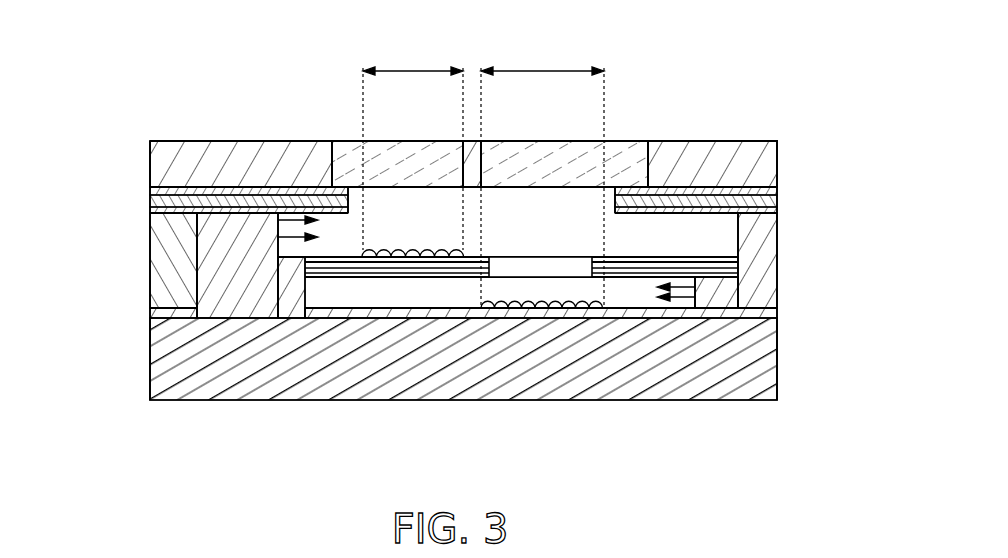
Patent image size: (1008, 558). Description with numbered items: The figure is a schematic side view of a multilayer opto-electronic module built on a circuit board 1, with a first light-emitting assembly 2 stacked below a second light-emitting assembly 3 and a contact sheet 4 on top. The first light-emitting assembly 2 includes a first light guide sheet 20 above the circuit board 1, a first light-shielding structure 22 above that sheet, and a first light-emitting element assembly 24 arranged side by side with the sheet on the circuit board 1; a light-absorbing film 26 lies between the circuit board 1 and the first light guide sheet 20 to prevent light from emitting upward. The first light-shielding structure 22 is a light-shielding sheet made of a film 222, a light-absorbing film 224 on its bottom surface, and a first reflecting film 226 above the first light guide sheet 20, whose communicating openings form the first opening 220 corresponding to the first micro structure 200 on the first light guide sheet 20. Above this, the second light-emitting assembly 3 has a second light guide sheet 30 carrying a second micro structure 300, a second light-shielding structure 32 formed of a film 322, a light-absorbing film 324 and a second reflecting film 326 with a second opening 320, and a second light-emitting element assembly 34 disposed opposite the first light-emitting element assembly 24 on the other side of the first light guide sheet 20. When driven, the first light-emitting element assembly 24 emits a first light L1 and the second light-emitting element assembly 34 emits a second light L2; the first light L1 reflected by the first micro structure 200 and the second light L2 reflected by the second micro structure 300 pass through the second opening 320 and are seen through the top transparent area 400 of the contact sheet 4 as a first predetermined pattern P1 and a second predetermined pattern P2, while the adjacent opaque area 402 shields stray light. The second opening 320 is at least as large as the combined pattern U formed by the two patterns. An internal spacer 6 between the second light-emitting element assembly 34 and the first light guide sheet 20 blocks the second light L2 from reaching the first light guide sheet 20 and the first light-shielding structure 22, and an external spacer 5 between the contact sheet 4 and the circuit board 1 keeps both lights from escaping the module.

The circuit board 1 is at (165, 366).
The first light-emitting assembly 2 is at (601, 292).
The second light-emitting assembly 3 is at (391, 292).
The contact sheet 4 is at (463, 119).
The external spacer 5 is at (183, 312).
The internal spacer 6 is at (300, 312).
The first light guide sheet 20 is at (463, 296).
The first light-shielding structure 22 is at (585, 271).
The first light-emitting element assembly 24 is at (717, 312).
The light-absorbing film 26 is at (519, 310).
The second light guide sheet 30 is at (150, 263).
The second light-shielding structure 32 is at (404, 185).
The second light-emitting element assembly 34 is at (150, 293).
The first micro structure 200 is at (556, 296).
The first opening 220 is at (573, 250).
The film 222 is at (757, 246).
The light-absorbing film 224 is at (757, 270).
The first reflecting film 226 is at (577, 287).
The second micro structure 300 is at (413, 265).
The second opening 320 is at (411, 193).
The film 322 is at (150, 162).
The light-absorbing film 324 is at (150, 184).
The second reflecting film 326 is at (428, 215).
The top transparent area 400 is at (481, 140).
The opaque area 402 is at (260, 141).
The first light L1 is at (680, 302).
The second light L2 is at (150, 230).
The first predetermined pattern P1 is at (542, 62).
The second predetermined pattern P2 is at (413, 62).
The combined pattern U is at (392, 50).